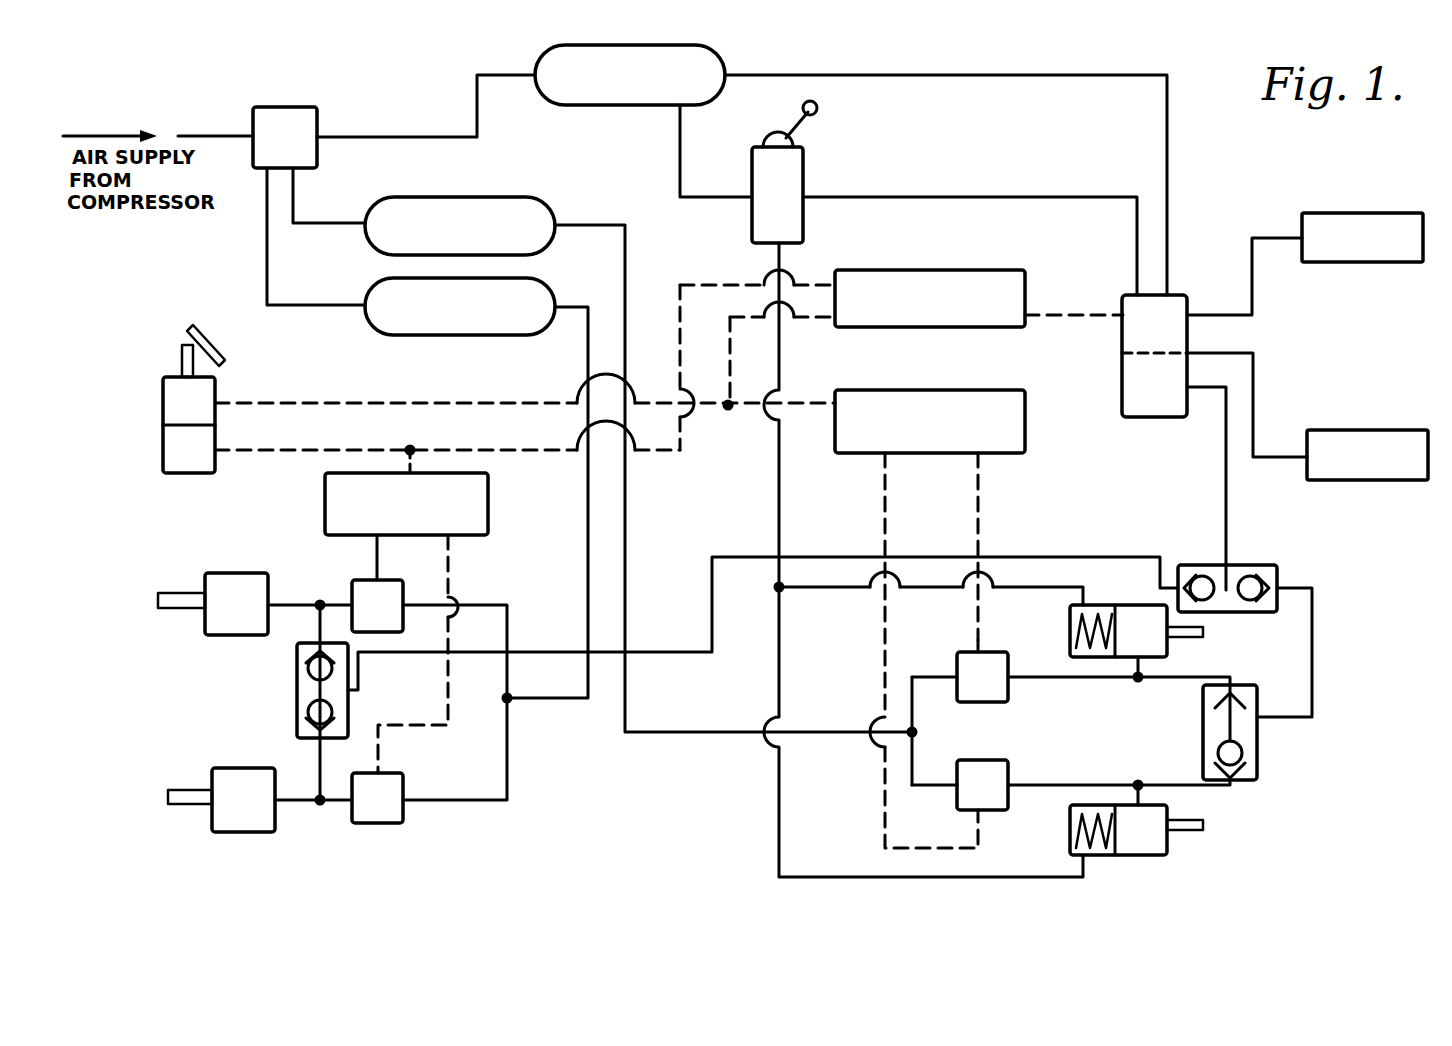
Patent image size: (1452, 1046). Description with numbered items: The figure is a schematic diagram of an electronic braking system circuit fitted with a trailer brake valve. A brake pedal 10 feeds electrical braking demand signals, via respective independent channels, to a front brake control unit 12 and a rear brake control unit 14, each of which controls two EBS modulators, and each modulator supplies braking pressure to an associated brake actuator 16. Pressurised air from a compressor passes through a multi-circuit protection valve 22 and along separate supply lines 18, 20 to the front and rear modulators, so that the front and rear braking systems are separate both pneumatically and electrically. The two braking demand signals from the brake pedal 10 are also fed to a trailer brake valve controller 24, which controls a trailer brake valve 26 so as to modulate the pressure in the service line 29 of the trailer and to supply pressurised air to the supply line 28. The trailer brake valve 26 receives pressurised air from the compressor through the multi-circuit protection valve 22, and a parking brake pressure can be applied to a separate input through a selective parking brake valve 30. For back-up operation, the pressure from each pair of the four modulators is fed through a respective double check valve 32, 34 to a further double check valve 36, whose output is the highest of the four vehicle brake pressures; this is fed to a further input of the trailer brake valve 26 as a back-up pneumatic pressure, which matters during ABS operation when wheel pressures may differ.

The brake pedal 10 is at (226, 395).
The front brake control unit 12 is at (496, 520).
The rear brake control unit 14 is at (860, 462).
The brake actuator 16 is at (1180, 656).
The supply line 18 is at (557, 300).
The supply line 20 is at (568, 218).
The multi-circuit protection valve 22 is at (320, 128).
The trailer brake valve controller 24 is at (1032, 297).
The trailer brake valve 26 is at (1194, 305).
The supply line 28 is at (1258, 413).
The service line 29 is at (1252, 299).
The selective parking brake valve 30 is at (748, 182).
The double check valve 32 is at (357, 702).
The double check valve 34 is at (1264, 750).
The double check valve 36 is at (1282, 577).